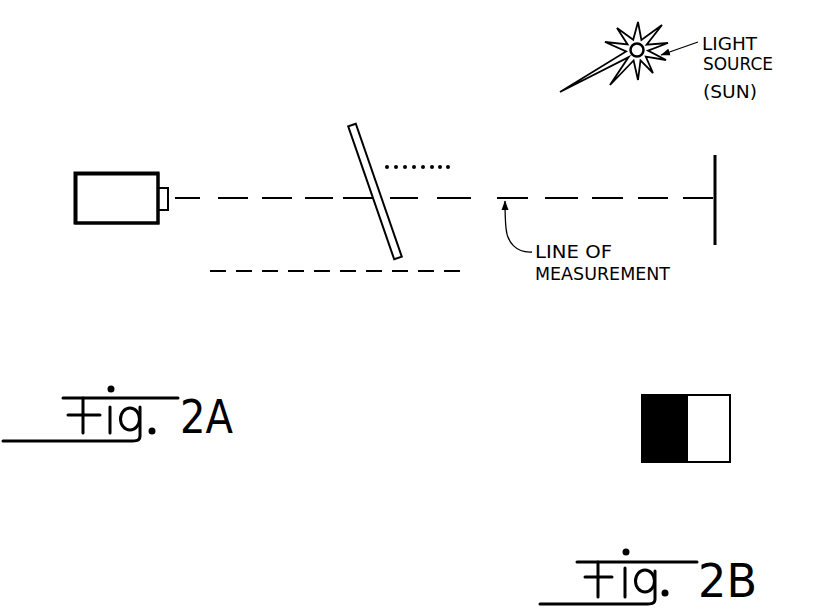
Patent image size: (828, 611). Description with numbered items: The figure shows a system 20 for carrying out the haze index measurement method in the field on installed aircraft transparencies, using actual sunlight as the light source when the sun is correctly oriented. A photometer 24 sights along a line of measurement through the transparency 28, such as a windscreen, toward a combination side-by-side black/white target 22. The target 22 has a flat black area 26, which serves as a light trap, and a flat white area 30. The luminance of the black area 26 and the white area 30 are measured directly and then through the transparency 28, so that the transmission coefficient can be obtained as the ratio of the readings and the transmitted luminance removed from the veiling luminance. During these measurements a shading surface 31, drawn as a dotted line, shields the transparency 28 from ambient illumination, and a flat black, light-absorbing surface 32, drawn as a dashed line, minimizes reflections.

In FIG. 2A, the system 20 is at (117, 150).
In FIG. 2A, the black/white target 22 is at (718, 175).
In FIG. 2B, the black/white target 22 is at (631, 416).
In FIG. 2A, the photometer 24 is at (72, 219).
In FIG. 2B, the flat black area 26 is at (661, 466).
In FIG. 2A, the transparency 28 is at (352, 121).
In FIG. 2B, the flat white area 30 is at (700, 466).
In FIG. 2A, the shading surface 31 is at (415, 162).
In FIG. 2A, the light-absorbing surface 32 is at (242, 274).